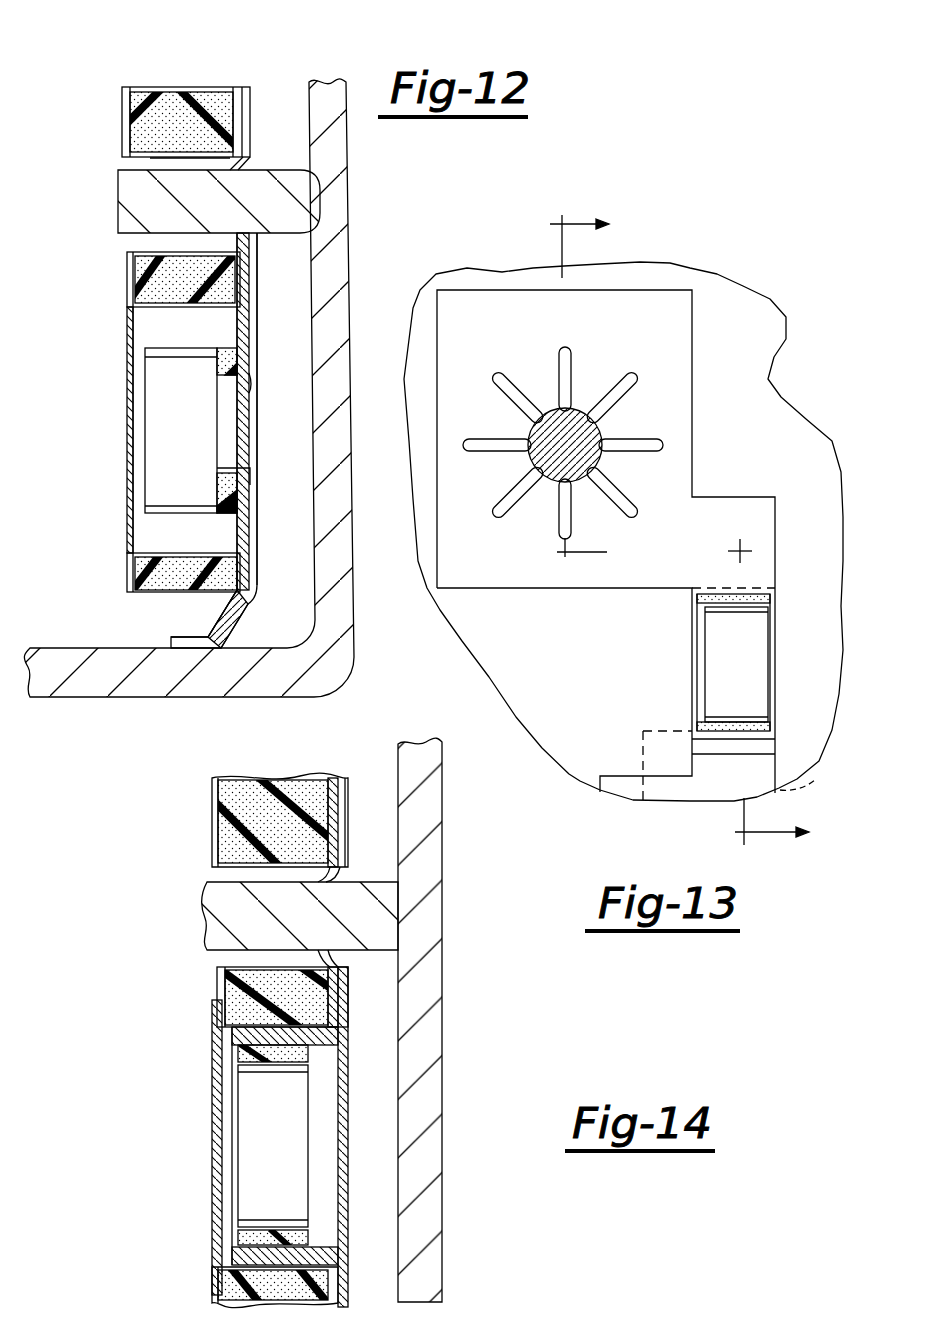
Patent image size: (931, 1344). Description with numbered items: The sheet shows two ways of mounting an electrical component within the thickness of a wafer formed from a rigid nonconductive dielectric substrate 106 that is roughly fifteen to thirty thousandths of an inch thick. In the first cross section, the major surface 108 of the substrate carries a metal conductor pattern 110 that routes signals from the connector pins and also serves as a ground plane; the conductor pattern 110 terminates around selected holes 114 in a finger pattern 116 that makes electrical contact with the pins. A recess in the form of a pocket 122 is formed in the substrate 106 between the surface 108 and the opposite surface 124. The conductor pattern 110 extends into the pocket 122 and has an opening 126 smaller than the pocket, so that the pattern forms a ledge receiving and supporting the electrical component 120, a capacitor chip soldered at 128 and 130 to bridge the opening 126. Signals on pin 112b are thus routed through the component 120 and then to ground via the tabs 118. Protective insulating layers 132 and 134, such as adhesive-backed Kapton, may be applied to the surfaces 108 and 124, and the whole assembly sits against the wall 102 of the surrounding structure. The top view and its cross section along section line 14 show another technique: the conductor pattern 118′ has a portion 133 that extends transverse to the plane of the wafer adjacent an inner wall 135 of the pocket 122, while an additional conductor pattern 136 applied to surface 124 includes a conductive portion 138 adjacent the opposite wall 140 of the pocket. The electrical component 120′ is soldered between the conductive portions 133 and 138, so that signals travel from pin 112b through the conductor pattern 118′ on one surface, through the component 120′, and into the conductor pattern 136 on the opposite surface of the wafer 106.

In FIG. 12, the housing wall 102 is at (153, 680).
In FIG. 12, the substrate 106 is at (185, 90).
In FIG. 14, the substrate 106 is at (258, 796).
In FIG. 12, the major surface 108 is at (240, 560).
In FIG. 13, the major surface 108 is at (764, 420).
In FIG. 14, the major surface 108 is at (328, 828).
In FIG. 12, the conductor pattern 110 is at (244, 297).
In FIG. 12, the pin 112b is at (135, 197).
In FIG. 13, the pin 112b is at (585, 433).
In FIG. 14, the pin 112b is at (212, 920).
In FIG. 12, the holes 114 is at (150, 158).
In FIG. 12, the finger pattern 116 is at (246, 160).
In FIG. 13, the finger pattern 116 is at (533, 383).
In FIG. 12, the tabs 118 is at (222, 635).
In FIG. 13, the conductor pattern 118′ is at (676, 363).
In FIG. 14, the conductor pattern 118′ is at (335, 1005).
In FIG. 12, the electrical component 120 is at (158, 447).
In FIG. 13, the electrical component 120′ is at (742, 674).
In FIG. 14, the electrical component 120′ is at (243, 1122).
In FIG. 12, the pocket 122 is at (163, 307).
In FIG. 14, the pocket 122 is at (322, 1136).
In FIG. 12, the surface 124 is at (127, 266).
In FIG. 14, the surface 124 is at (212, 826).
In FIG. 12, the opening 126 is at (249, 393).
In FIG. 12, the solder 128 is at (230, 362).
In FIG. 12, the solder 130 is at (224, 469).
In FIG. 12, the protective insulating layer 132 is at (238, 500).
In FIG. 14, the protective insulating layer 132 is at (345, 1083).
In FIG. 13, the portion 133 is at (751, 587).
In FIG. 14, the portion 133 is at (237, 1038).
In FIG. 12, the protective insulating layer 134 is at (130, 571).
In FIG. 14, the inner wall 135 is at (243, 1028).
In FIG. 13, the conductor pattern 136 is at (790, 763).
In FIG. 14, the conductor pattern 136 is at (232, 1262).
In FIG. 13, the conductive portion 138 is at (753, 739).
In FIG. 14, the conductive portion 138 is at (313, 1248).
In FIG. 14, the wall 140 is at (303, 1265).
In FIG. 13, the section line 14 is at (679, 538).